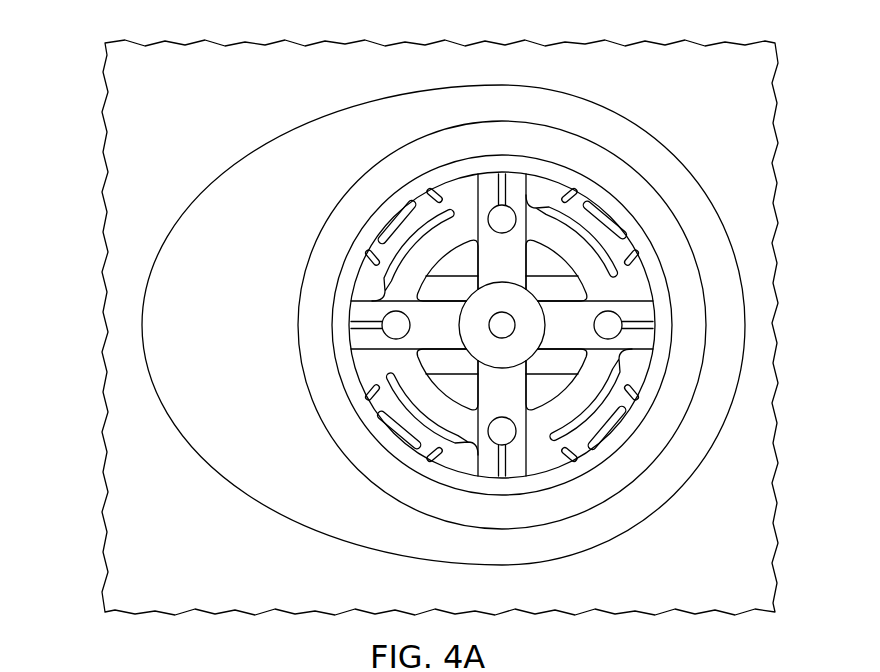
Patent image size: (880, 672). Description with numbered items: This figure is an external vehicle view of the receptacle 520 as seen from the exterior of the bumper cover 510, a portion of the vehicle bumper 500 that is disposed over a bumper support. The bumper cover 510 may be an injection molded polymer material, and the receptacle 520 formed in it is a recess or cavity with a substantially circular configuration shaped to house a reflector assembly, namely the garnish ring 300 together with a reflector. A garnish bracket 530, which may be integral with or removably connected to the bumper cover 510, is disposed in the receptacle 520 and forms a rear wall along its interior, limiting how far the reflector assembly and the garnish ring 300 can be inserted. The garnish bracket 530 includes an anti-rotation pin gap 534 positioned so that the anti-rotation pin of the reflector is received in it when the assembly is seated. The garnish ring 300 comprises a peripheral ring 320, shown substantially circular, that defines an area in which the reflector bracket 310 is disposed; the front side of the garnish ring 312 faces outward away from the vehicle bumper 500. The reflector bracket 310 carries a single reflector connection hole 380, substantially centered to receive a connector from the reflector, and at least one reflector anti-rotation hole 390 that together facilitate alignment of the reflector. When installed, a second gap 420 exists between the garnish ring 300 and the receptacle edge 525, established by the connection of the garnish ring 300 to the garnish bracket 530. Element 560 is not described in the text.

The garnish ring 300 is at (708, 311).
The reflector bracket 310 is at (427, 247).
The front side of the garnish ring 312 is at (591, 158).
The peripheral ring 320 is at (367, 184).
The reflector connection hole 380 is at (489, 324).
The reflector anti-rotation hole 390 is at (492, 211).
The second gap 420 is at (728, 352).
The vehicle bumper 500 is at (166, 90).
The bumper cover 510 is at (125, 578).
The receptacle 520 is at (225, 200).
The receptacle edge 525 is at (574, 94).
The garnish bracket 530 is at (610, 208).
The anti-rotation pin gap 534 is at (462, 464).
The outer region 560 is at (726, 528).